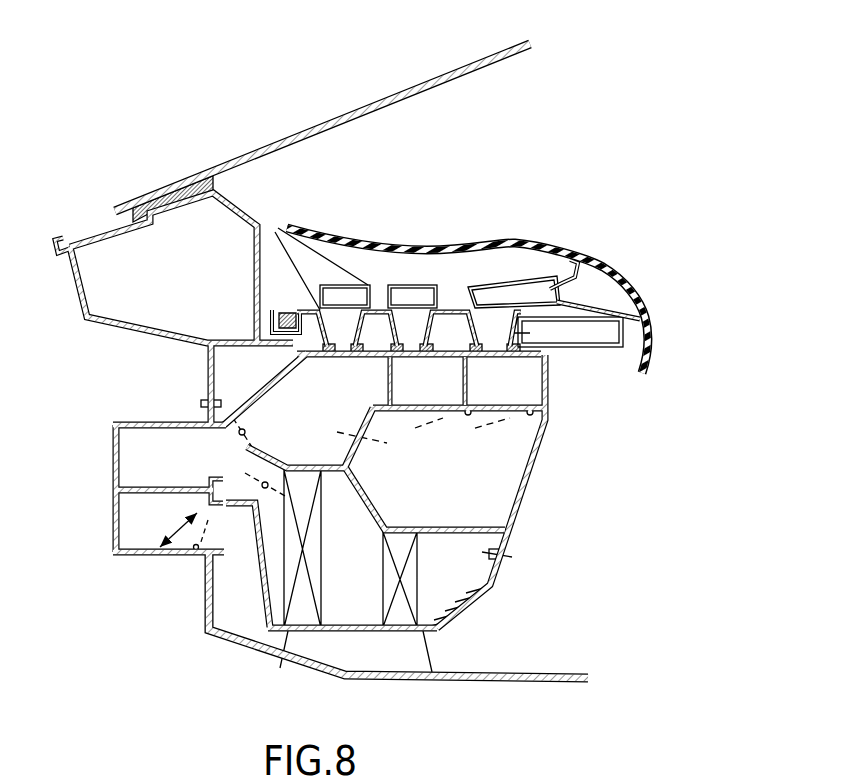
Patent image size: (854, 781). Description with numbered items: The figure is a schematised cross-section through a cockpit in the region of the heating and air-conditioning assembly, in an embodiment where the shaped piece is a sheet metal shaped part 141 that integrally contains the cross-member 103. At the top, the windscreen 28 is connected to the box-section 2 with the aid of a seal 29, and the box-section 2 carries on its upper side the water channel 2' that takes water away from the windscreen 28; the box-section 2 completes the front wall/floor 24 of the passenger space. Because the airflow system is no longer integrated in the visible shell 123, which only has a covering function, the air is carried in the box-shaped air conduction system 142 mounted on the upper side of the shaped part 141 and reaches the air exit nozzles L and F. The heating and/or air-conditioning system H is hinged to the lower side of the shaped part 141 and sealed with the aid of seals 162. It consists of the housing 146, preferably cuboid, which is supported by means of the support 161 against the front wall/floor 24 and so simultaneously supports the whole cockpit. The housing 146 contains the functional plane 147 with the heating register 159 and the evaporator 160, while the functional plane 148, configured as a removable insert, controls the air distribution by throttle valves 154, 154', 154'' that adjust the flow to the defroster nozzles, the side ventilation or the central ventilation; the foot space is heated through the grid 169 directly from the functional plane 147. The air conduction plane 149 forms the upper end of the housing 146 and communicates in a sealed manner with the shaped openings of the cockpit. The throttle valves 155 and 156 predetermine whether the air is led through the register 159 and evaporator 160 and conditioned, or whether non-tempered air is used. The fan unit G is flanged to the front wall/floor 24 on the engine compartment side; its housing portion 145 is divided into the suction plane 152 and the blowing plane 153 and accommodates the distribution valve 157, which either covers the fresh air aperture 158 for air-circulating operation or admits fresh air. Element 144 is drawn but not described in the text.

The windscreen 28 is at (491, 49).
The seal 29 is at (186, 211).
The box-section 2 is at (181, 288).
The water channel 2' is at (63, 216).
The housing 146 is at (258, 385).
The housing portion 145 is at (115, 533).
The blowing plane 153 is at (162, 467).
The suction plane 152 is at (162, 529).
The fan unit G is at (95, 489).
The throttle valve 156 is at (245, 478).
The throttle valve 155 is at (262, 445).
The distribution valve 157 is at (215, 532).
The fresh air aperture 158 is at (178, 558).
The front wall/floor 24 is at (235, 645).
The functional plane 147 is at (348, 637).
The support 161 is at (410, 660).
The functional plane 148 is at (515, 470).
The grid 169 is at (493, 615).
The heating and/or air-conditioning system H is at (537, 520).
The heating register 159 is at (322, 552).
The evaporator 160 is at (413, 578).
The throttle valve 154 is at (379, 478).
The throttle valve 154' is at (443, 455).
The throttle valve 154'' is at (498, 455).
The air conduction plane 149 is at (350, 392).
The seal 162 is at (430, 352).
The sheet metal shaped part 141 is at (280, 303).
The seal 144 is at (272, 306).
The box-shaped air conduction system 142 is at (489, 303).
The air exit nozzle F is at (274, 226).
The visible shell 123 is at (490, 300).
The air exit nozzle L is at (633, 273).
The cross-member 103 is at (588, 335).